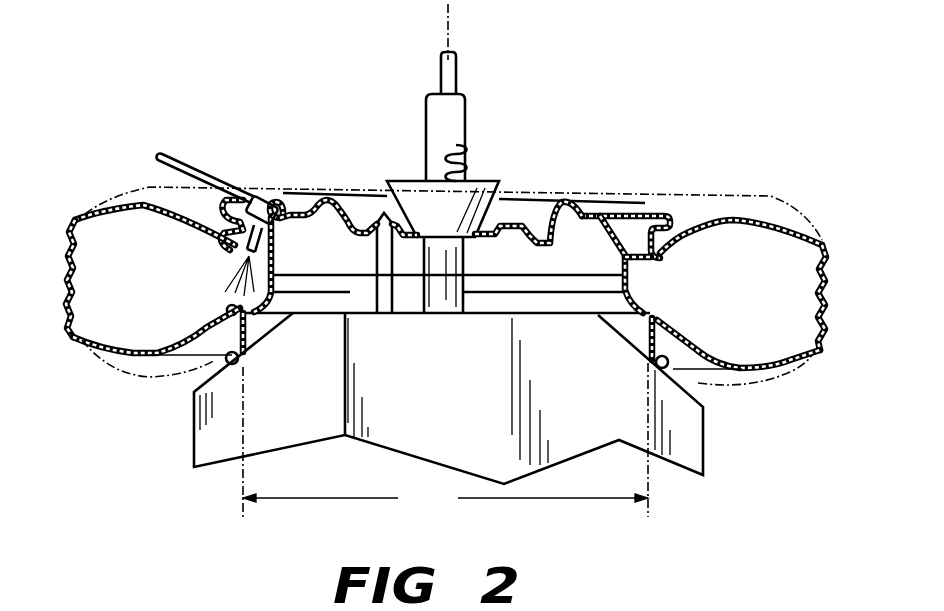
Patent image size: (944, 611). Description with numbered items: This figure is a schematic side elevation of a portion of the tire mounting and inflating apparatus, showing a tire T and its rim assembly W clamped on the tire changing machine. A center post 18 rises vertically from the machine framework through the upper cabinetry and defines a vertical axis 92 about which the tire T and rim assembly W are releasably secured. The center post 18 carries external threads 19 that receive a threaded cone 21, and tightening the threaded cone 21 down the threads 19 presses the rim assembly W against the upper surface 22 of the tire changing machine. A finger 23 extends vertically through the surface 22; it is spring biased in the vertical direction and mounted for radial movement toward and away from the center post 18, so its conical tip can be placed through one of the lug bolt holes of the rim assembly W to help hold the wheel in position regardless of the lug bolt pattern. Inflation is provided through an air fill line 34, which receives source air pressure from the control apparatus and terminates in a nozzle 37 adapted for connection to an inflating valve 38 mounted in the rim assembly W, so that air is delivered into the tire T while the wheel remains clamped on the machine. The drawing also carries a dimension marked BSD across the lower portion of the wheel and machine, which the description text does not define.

The vertical axis 92 is at (448, 8).
The center post 18 is at (448, 118).
The external threads 19 is at (468, 152).
The threaded cone 21 is at (403, 192).
The finger 23 is at (382, 232).
The rim assembly W is at (634, 220).
The tire T is at (828, 248).
The air fill line 34 is at (203, 178).
The nozzle 37 is at (260, 198).
The inflating valve 38 is at (232, 257).
The surface 22 is at (203, 387).
The bead seat diameter BSD is at (445, 440).